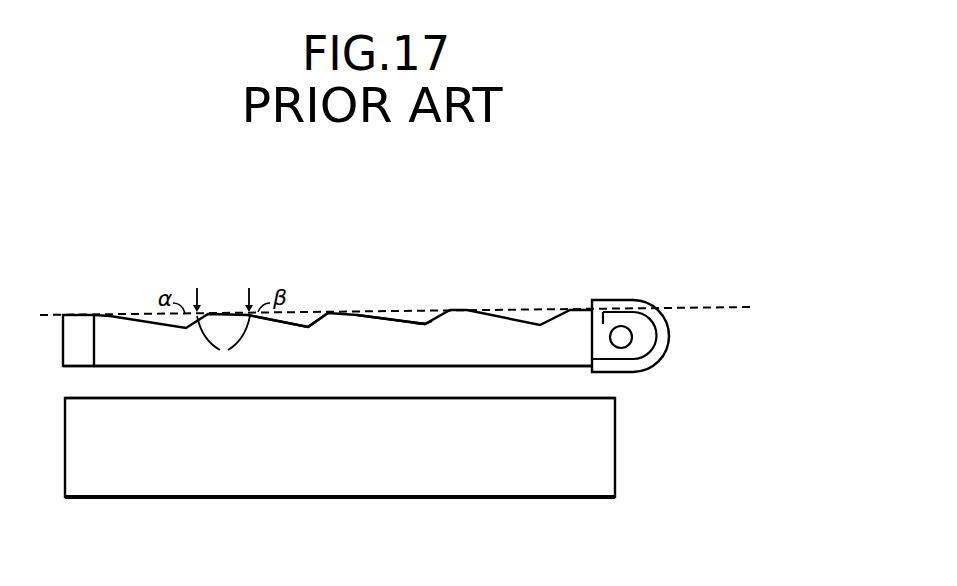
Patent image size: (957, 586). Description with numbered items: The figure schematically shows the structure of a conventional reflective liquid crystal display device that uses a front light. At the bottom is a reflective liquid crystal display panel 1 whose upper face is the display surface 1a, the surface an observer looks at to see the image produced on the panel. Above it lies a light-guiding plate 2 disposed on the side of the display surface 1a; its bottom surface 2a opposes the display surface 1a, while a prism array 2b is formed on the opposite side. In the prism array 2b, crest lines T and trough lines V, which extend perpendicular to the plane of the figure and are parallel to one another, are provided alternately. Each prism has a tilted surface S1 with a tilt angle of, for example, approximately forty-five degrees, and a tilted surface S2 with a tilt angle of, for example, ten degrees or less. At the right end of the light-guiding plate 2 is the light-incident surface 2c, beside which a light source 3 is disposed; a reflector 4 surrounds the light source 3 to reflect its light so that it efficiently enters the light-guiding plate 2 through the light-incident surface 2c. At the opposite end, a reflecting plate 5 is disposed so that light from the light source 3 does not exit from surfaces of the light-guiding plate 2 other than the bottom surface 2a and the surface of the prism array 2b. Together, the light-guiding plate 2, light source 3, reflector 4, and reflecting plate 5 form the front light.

The reflective liquid crystal display panel 1 is at (337, 458).
The display surface 1a is at (202, 396).
The light-guiding plate 2 is at (118, 327).
The bottom surface 2a is at (443, 367).
The prism array 2b is at (370, 323).
The light-incident surface 2c is at (603, 322).
The light source 3 is at (620, 338).
The reflector 4 is at (630, 370).
The reflecting plate 5 is at (75, 317).
The crest lines T is at (215, 307).
The tilted surface S1 is at (322, 318).
The tilted surface S2 is at (294, 322).
The trough lines V is at (422, 325).